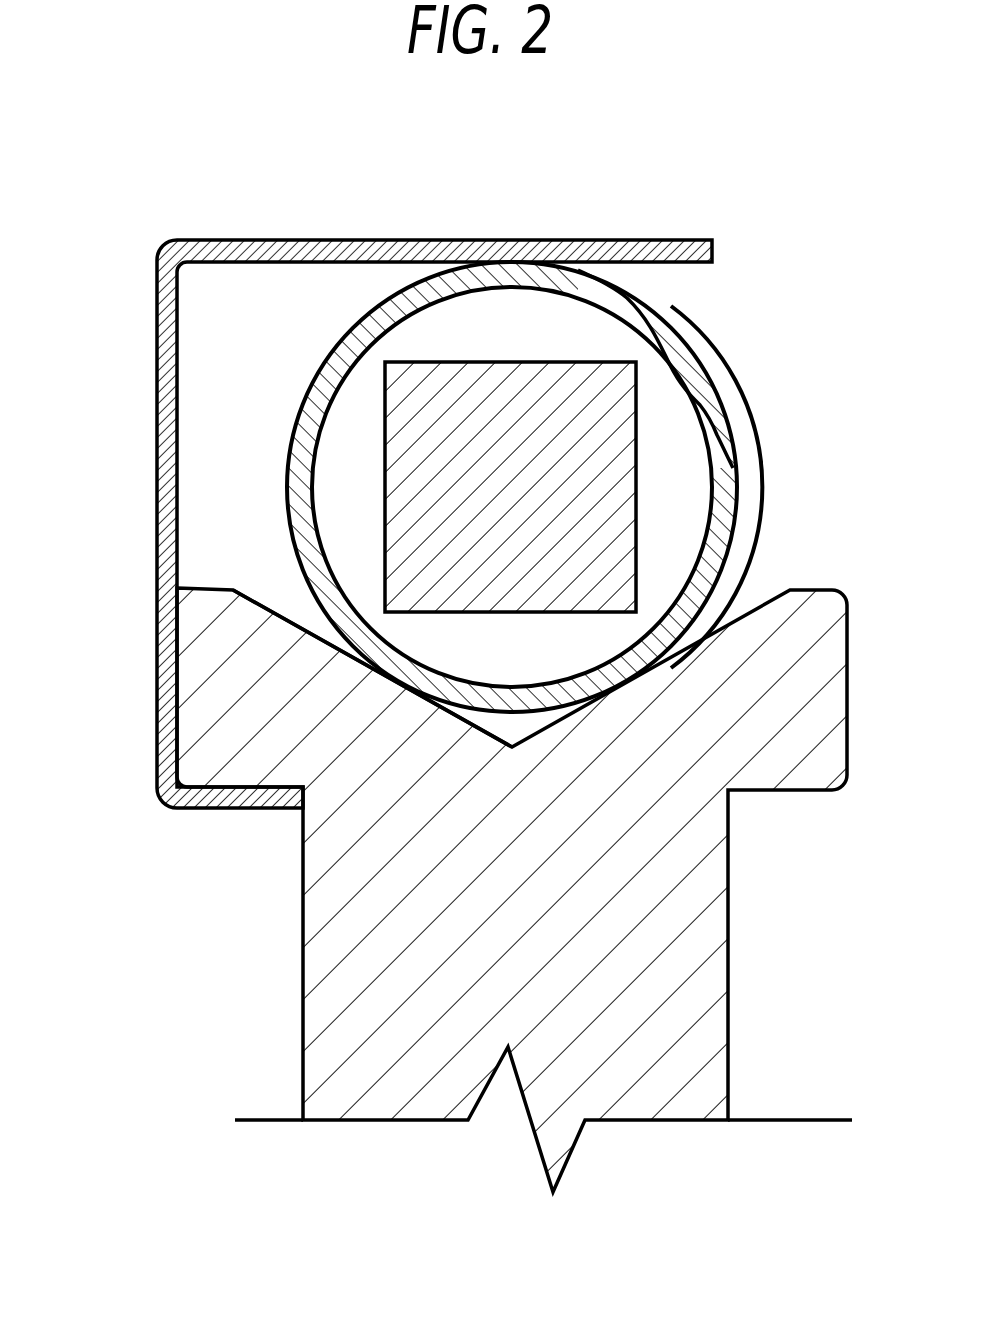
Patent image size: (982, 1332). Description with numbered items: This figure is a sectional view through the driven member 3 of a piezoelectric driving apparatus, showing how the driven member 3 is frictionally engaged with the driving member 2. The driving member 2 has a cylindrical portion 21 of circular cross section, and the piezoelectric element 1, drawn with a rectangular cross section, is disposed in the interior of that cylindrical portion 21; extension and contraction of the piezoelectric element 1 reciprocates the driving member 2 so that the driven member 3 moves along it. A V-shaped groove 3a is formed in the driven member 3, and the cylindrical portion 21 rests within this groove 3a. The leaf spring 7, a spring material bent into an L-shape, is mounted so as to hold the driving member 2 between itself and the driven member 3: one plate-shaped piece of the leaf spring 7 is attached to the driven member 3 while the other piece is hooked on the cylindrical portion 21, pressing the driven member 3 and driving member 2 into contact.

The piezoelectric element 1 is at (618, 433).
The driving member 2 is at (690, 375).
The cylindrical portion 21 is at (735, 503).
The driven member 3 is at (318, 1001).
The V-shaped groove 3a is at (270, 607).
The leaf spring 7 is at (278, 241).